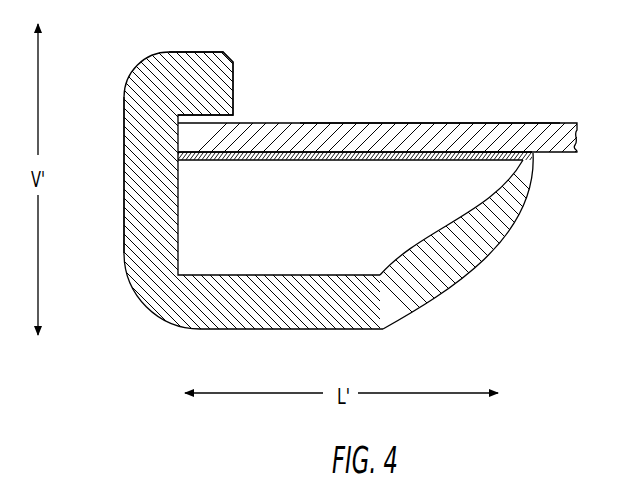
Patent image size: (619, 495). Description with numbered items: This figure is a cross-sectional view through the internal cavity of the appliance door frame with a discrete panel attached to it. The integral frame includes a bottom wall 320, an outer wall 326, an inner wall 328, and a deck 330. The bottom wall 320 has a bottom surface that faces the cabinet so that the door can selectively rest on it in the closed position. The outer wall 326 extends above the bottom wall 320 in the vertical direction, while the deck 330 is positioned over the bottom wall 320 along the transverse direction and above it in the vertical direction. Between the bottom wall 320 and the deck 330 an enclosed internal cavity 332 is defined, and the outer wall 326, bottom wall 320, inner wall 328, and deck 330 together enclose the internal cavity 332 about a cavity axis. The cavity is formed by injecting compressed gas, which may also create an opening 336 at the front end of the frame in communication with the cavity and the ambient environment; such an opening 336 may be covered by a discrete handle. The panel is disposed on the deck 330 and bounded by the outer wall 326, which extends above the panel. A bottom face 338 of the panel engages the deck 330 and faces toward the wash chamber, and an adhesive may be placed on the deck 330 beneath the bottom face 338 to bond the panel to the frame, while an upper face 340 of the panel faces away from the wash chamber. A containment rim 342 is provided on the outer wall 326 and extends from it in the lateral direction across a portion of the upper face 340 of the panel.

The bottom wall 320 is at (262, 329).
The outer wall 326 is at (124, 203).
The inner wall 328 is at (503, 232).
The deck 330 is at (410, 160).
The internal cavity 332 is at (352, 242).
The opening 336 is at (494, 123).
The bottom face 338 is at (491, 159).
The upper face 340 is at (452, 120).
The containment rim 342 is at (197, 52).